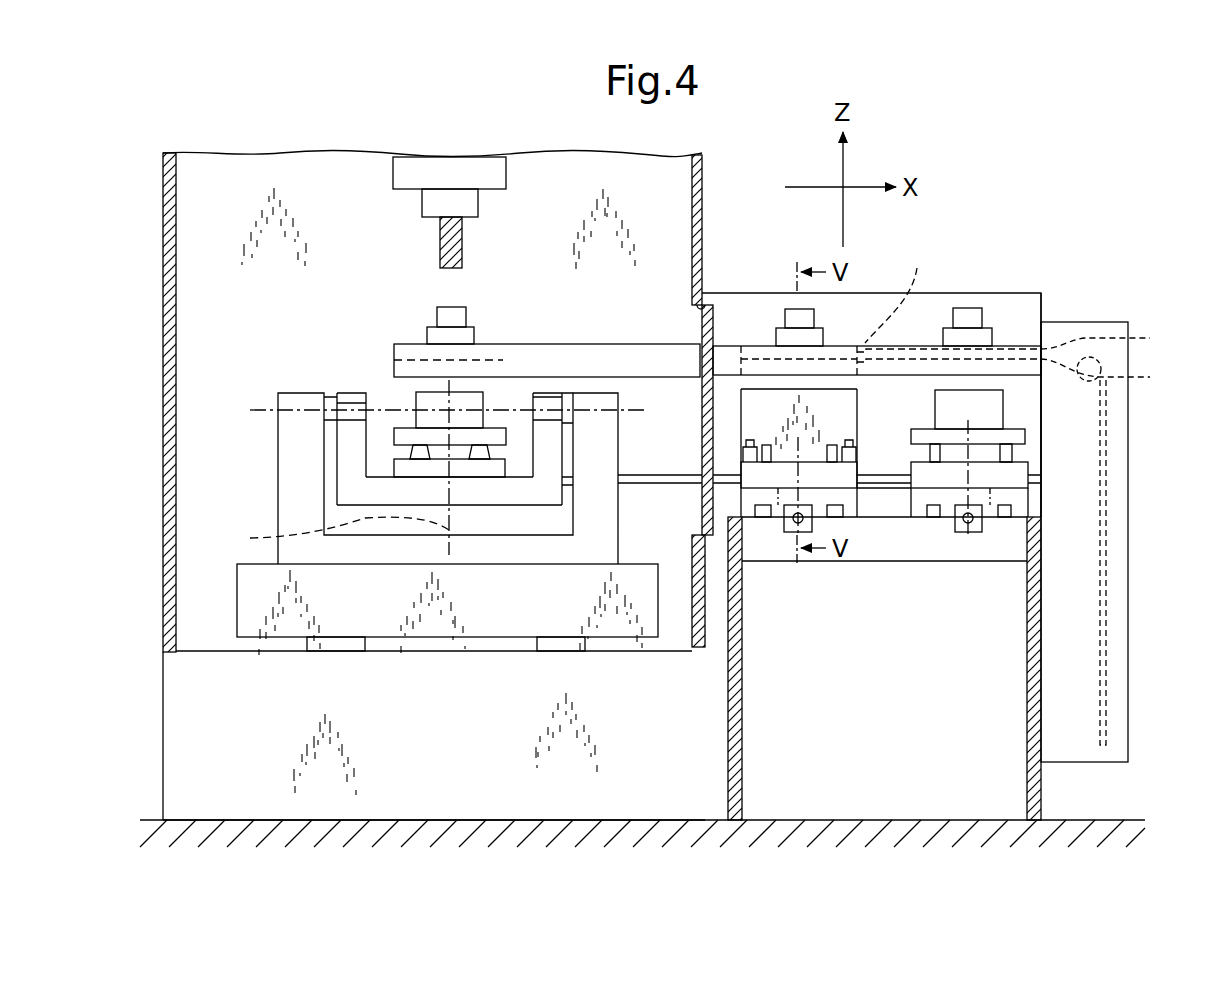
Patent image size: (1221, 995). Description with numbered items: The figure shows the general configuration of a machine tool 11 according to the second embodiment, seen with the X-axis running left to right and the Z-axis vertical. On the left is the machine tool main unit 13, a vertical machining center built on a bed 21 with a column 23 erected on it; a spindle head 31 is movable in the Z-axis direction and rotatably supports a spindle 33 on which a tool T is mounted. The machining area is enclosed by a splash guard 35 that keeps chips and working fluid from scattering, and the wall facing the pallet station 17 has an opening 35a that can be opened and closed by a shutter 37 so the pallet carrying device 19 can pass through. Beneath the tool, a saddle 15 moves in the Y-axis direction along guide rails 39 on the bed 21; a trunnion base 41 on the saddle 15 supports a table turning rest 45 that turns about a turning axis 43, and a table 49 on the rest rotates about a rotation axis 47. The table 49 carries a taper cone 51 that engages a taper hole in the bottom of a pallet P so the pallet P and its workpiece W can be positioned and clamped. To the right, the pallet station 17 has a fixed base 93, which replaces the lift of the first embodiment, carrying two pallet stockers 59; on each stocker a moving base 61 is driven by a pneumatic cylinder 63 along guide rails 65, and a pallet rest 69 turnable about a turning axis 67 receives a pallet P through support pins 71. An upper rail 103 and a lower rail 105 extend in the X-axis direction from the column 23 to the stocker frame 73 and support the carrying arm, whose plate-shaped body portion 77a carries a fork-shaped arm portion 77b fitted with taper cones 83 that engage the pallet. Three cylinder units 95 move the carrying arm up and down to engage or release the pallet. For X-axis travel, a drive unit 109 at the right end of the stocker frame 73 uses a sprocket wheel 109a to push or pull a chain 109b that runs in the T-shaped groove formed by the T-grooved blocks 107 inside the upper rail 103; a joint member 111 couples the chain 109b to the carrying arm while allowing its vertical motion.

The machine tool 11 is at (716, 147).
The machine tool main unit 13 is at (158, 267).
The saddle 15 is at (257, 623).
The pallet station 17 is at (986, 277).
The pallet carrying device 19 is at (840, 335).
The bed 21 is at (193, 772).
The column 23 is at (200, 377).
The spindle head 31 is at (493, 172).
The spindle 33 is at (480, 201).
The tool T is at (464, 243).
The splash guard 35 is at (170, 545).
The opening 35a is at (713, 318).
The shutter 37 is at (733, 303).
The guide rails 39 is at (320, 641).
The trunnion base 41 is at (297, 468).
The turning axis 43 is at (264, 406).
The table turning rest 45 is at (347, 441).
The rotation axis 47 is at (333, 535).
The table 49 is at (402, 468).
The taper cone 51 is at (490, 454).
The pallet P is at (406, 428).
The workpiece W is at (992, 410).
The pallet stockers 59 is at (862, 468).
The moving base 61 is at (738, 503).
The pneumatic cylinder 63 is at (793, 533).
The guide rails 65 is at (835, 518).
The turning axis 67 is at (778, 520).
The pallet rest 69 is at (862, 503).
The support pins 71 is at (766, 445).
The stocker frame 73 is at (1028, 316).
The body portion 77a is at (853, 399).
The arm portion 77b is at (858, 458).
The taper cones 83 is at (848, 442).
The fixed base 93 is at (890, 538).
The cylinder units 95 is at (437, 316).
The upper rail 103 is at (630, 358).
The lower rail 105 is at (663, 483).
The T-grooved block 107 is at (503, 360).
The drive unit 109 is at (1105, 322).
The sprocket wheel 109a is at (1128, 375).
The chain 109b is at (1128, 533).
The joint member 111 is at (904, 293).